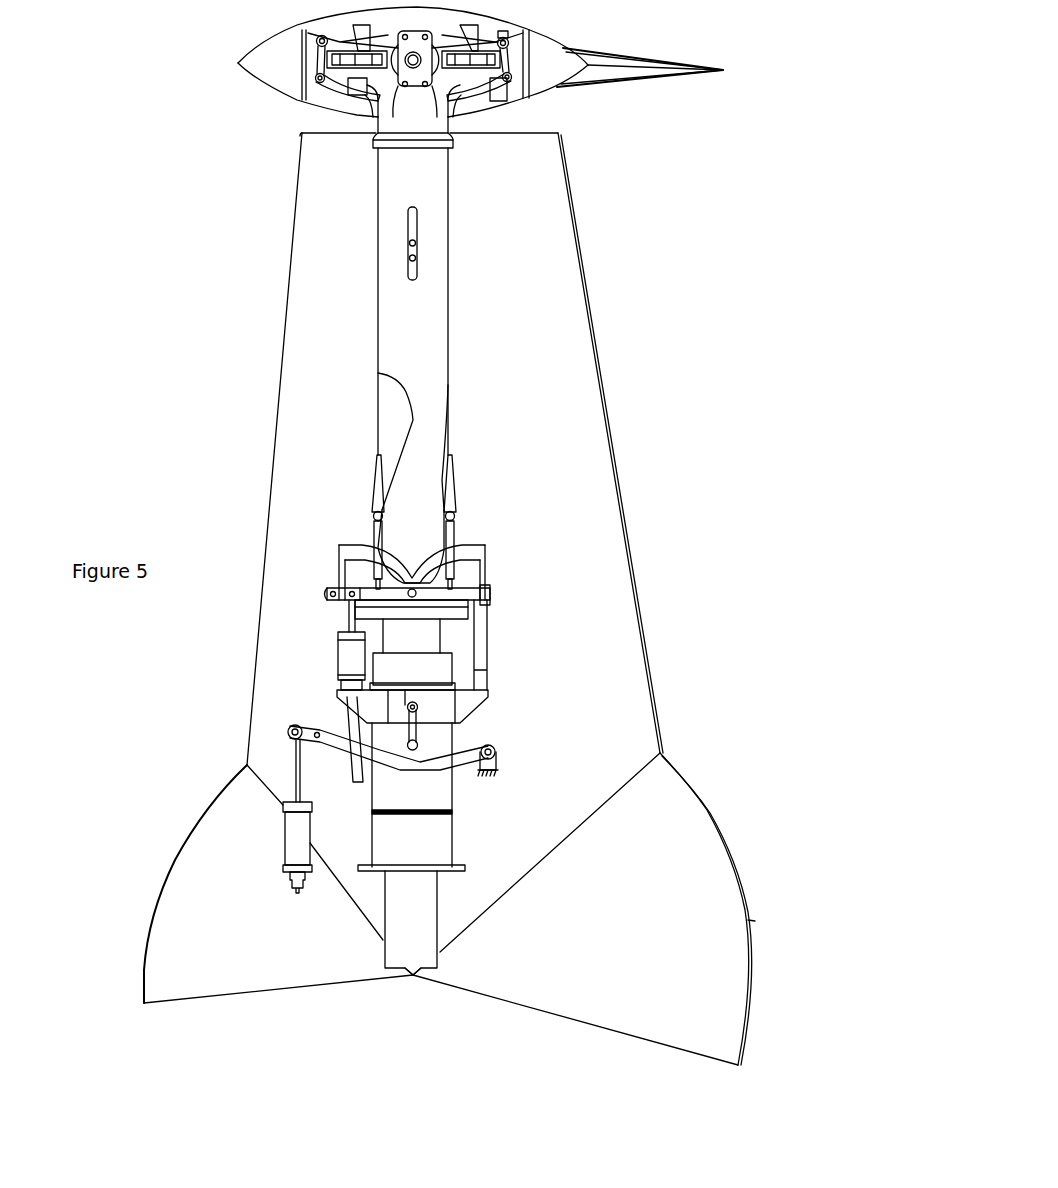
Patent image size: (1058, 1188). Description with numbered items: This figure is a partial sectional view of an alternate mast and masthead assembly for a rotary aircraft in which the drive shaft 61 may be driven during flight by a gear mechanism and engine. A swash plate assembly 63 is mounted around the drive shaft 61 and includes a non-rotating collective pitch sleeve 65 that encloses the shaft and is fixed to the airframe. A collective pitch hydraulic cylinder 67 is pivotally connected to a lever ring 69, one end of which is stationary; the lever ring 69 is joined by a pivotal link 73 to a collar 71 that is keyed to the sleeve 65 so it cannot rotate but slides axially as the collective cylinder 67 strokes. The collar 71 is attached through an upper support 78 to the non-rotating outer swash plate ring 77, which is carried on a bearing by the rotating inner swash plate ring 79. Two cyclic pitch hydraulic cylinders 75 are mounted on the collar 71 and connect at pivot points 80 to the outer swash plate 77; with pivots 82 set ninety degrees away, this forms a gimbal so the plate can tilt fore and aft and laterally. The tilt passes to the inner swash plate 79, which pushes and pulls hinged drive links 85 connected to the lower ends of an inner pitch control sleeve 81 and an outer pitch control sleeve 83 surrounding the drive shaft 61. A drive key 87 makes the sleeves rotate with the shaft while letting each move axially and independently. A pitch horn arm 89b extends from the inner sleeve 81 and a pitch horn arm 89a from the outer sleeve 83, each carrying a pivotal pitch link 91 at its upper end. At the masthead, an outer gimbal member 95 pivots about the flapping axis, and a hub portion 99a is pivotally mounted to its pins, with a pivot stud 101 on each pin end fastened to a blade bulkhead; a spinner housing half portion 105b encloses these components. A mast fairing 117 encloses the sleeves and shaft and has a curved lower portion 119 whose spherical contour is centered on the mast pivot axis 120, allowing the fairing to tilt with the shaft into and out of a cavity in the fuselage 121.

The drive shaft 61 is at (393, 953).
The swash plate assembly 63 is at (497, 682).
The non-rotating collective pitch sleeve 65 is at (376, 837).
The collective pitch hydraulic cylinder 67 is at (247, 765).
The lever ring 69 is at (320, 728).
The collar 71 is at (470, 705).
The pivotal link 73 is at (417, 728).
The cyclic pitch hydraulic cylinders 75 is at (342, 652).
The non-rotating outer swash plate ring 77 is at (463, 597).
The upper support 78 is at (483, 547).
The rotating inner swash plate ring 79 is at (373, 610).
The pivot points 80 is at (490, 597).
The inner pitch control sleeve 81 is at (388, 428).
The pivots 82 is at (416, 593).
The outer pitch control sleeve 83 is at (445, 353).
The drive links 85 is at (372, 533).
The drive key 87 is at (418, 248).
The pitch horn arm 89a is at (508, 82).
The pitch horn arm 89b is at (318, 78).
The pivotal pitch link 91 is at (318, 70).
The outer gimbal member 95 is at (540, 83).
The hub portion 99a is at (360, 82).
The pivot stud 101 is at (530, 97).
The spinner housing half portion 105b is at (323, 75).
The mast fairing 117 is at (613, 463).
The curved lower portion 119 is at (707, 810).
The mast pivot axis 120 is at (413, 975).
The fuselage 121 is at (808, 923).